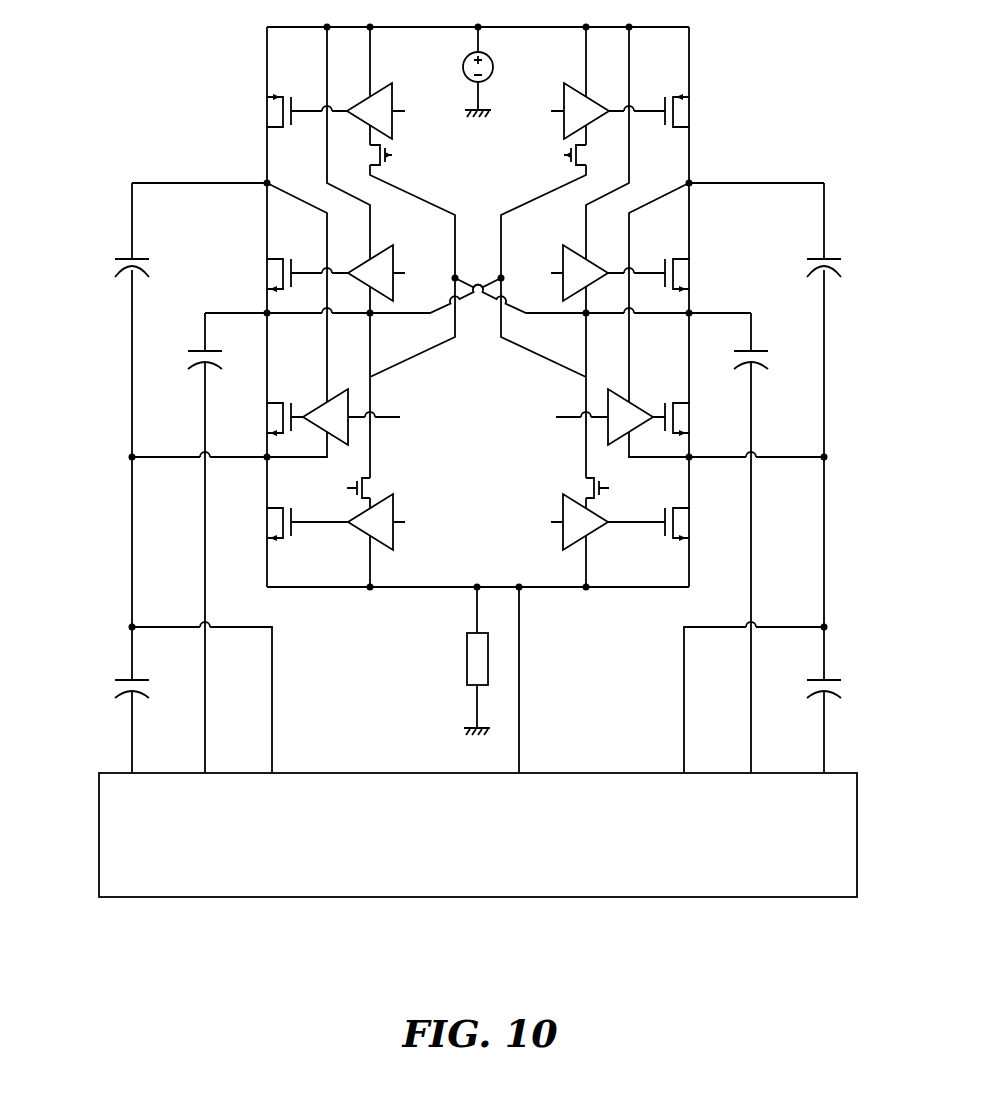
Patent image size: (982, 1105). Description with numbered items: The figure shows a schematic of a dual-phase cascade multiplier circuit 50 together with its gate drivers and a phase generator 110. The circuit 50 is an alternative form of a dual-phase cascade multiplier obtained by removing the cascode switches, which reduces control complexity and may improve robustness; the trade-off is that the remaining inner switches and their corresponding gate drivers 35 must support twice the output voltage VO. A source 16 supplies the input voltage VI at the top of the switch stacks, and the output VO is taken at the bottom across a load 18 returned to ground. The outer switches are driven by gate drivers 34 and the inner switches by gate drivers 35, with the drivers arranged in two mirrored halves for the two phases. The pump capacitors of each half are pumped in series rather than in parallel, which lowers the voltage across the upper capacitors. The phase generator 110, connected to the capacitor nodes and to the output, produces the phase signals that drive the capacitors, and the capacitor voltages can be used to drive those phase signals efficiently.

The dual-phase cascade multiplier circuit 50 is at (189, 58).
The input voltage source 16 is at (463, 67).
The load resistor 18 is at (467, 658).
The amplifier 34 is at (371, 119).
The gate driver 35 is at (371, 281).
The phase generator 110 is at (466, 868).